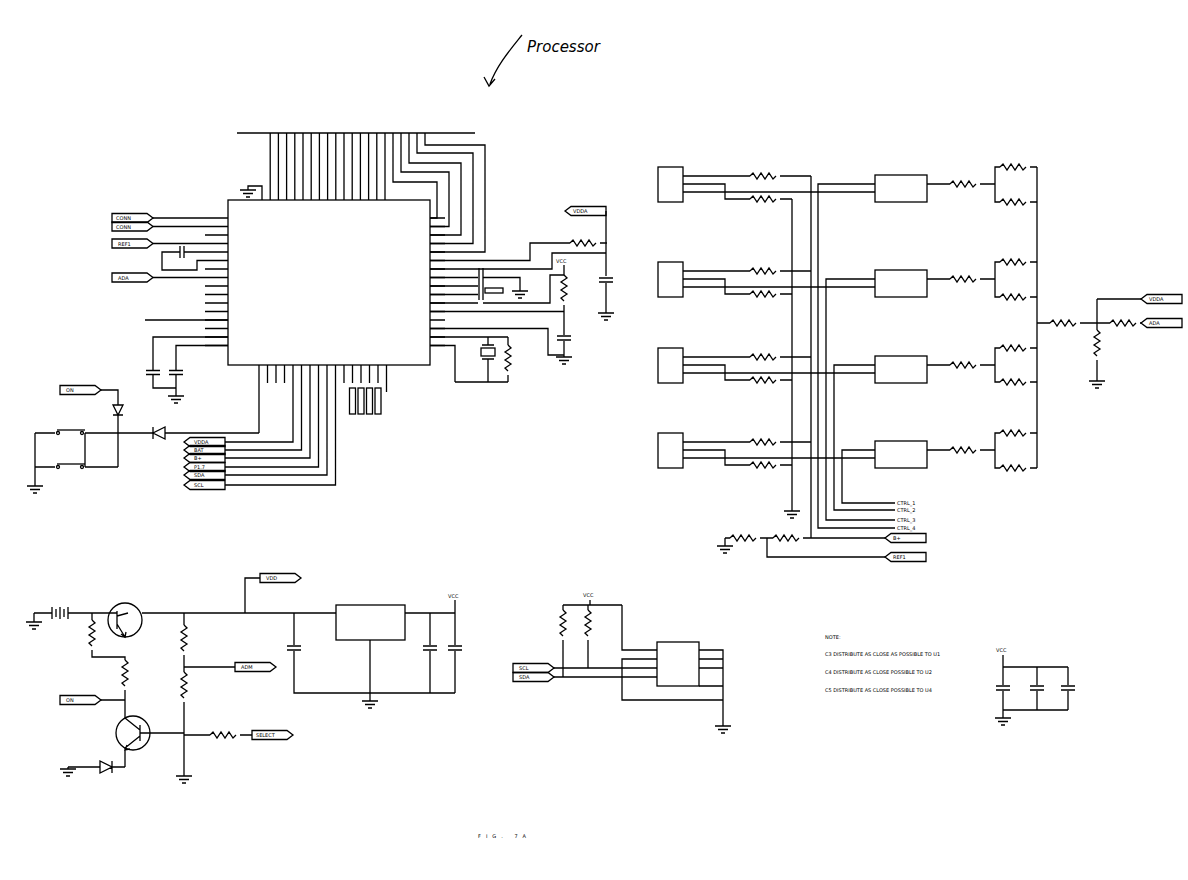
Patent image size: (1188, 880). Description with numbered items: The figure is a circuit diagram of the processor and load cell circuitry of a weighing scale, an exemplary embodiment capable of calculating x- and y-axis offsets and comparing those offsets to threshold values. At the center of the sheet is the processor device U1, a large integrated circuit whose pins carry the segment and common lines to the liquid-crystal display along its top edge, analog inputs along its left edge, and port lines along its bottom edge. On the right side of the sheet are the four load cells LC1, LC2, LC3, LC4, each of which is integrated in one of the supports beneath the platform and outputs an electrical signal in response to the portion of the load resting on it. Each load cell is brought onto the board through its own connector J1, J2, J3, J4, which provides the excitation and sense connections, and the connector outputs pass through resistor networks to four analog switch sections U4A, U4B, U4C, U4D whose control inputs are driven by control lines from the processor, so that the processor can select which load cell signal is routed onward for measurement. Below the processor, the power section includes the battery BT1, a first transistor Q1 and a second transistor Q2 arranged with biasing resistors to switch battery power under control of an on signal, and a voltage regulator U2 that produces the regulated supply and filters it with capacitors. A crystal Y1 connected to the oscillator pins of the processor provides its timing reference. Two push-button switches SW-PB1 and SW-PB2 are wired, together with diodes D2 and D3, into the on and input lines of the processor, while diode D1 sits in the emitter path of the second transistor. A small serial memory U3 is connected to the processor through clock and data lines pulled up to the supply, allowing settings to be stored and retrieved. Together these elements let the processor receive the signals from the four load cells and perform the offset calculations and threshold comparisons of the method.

The processor U1 is at (345, 254).
The voltage regulator U2 is at (370, 650).
The EEPROM U3 is at (678, 664).
The analog switch U4A is at (896, 189).
The analog switch U4B is at (897, 284).
The analog switch U4C is at (897, 370).
The analog switch U4D is at (898, 455).
The load cell connector 1 J1 is at (674, 189).
The load cell connector 2 J2 is at (674, 284).
The load cell connector 3 J3 is at (674, 370).
The load cell connector 4 J4 is at (674, 455).
The load cell LC1 is at (689, 152).
The load cell LC2 is at (689, 247).
The load cell LC3 is at (689, 333).
The load cell LC4 is at (689, 419).
The transistor Q1 is at (113, 616).
The transistor Q2 is at (150, 741).
The battery BT1 is at (67, 615).
The crystal Y1 is at (469, 359).
The diode D1 is at (92, 767).
The diode D2 is at (156, 434).
The diode D3 is at (128, 406).
The push button switch SW-PB1 is at (69, 461).
The push button switch SW-PB2 is at (69, 427).